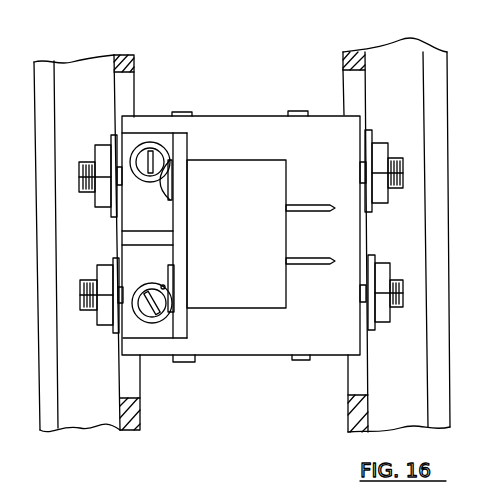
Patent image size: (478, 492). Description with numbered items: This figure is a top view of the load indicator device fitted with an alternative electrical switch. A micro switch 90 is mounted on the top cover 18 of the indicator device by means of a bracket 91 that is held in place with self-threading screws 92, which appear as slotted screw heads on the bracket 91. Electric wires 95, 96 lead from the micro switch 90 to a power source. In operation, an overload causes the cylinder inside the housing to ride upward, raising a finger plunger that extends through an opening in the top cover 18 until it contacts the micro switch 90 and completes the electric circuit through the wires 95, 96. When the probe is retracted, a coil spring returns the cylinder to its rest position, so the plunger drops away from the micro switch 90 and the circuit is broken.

The top cover 18 is at (316, 128).
The micro switch 90 is at (237, 190).
The bracket 91 is at (153, 260).
The self-threading screws 92 is at (151, 152).
The electric wire 95 is at (320, 205).
The electric wire 96 is at (325, 264).